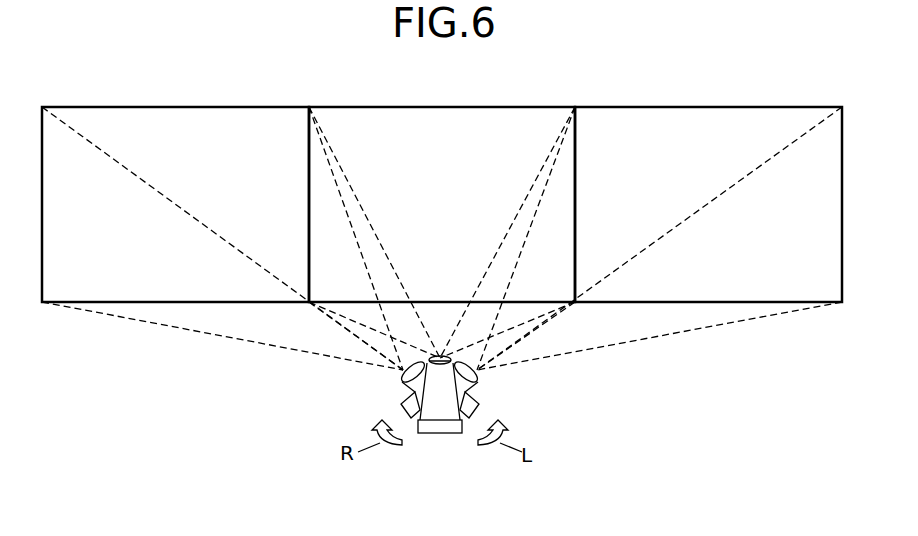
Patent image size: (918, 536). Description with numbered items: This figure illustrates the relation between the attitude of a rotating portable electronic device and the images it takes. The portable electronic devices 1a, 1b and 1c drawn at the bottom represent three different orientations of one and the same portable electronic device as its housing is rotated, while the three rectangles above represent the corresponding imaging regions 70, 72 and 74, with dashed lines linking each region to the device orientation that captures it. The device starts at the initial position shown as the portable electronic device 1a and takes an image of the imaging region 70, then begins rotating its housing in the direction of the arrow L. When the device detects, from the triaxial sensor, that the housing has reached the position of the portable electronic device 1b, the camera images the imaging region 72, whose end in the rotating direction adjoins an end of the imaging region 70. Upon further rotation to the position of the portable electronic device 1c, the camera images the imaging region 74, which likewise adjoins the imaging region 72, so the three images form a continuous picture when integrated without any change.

The imaging region 74 is at (167, 107).
The imaging region 72 is at (436, 107).
The imaging region 70 is at (701, 107).
The portable electronic device 1a is at (466, 384).
The portable electronic device 1b is at (437, 405).
The portable electronic device 1c is at (402, 383).